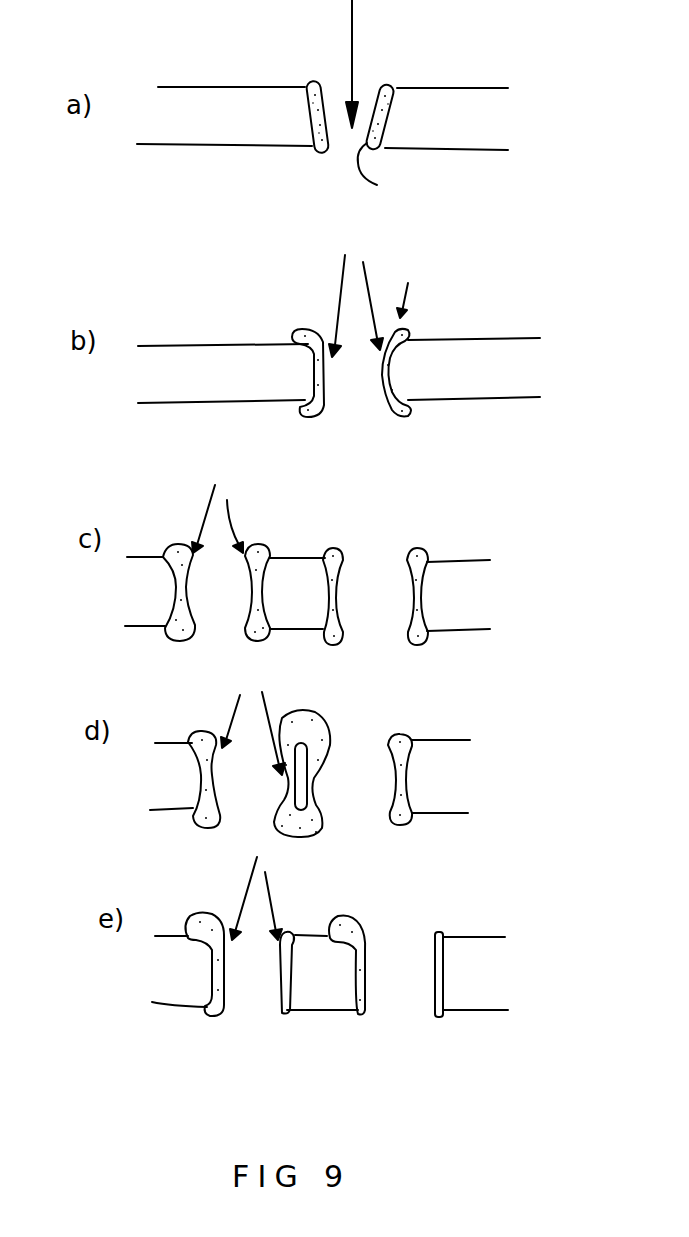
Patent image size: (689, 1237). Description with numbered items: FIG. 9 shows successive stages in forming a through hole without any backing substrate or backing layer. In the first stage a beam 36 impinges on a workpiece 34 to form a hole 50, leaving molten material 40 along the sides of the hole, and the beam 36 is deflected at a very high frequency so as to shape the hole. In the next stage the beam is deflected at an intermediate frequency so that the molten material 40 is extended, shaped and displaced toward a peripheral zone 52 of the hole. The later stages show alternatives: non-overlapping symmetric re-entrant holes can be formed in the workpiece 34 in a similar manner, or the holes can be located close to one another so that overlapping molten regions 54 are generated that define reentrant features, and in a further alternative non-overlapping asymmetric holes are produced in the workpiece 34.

The workpiece 34 is at (455, 102).
The beam 36 is at (352, 39).
The molten material 40 is at (397, 89).
The hole 50 is at (390, 169).
The peripheral zone 52 is at (419, 289).
The overlapping molten region 54 is at (308, 713).